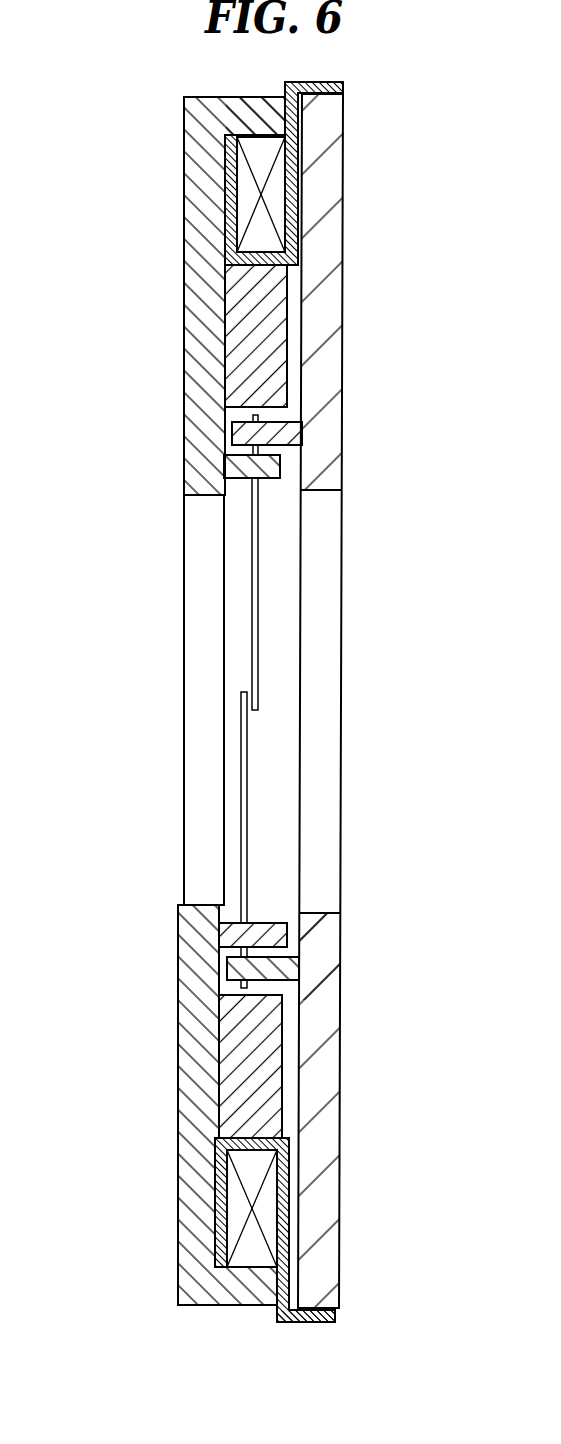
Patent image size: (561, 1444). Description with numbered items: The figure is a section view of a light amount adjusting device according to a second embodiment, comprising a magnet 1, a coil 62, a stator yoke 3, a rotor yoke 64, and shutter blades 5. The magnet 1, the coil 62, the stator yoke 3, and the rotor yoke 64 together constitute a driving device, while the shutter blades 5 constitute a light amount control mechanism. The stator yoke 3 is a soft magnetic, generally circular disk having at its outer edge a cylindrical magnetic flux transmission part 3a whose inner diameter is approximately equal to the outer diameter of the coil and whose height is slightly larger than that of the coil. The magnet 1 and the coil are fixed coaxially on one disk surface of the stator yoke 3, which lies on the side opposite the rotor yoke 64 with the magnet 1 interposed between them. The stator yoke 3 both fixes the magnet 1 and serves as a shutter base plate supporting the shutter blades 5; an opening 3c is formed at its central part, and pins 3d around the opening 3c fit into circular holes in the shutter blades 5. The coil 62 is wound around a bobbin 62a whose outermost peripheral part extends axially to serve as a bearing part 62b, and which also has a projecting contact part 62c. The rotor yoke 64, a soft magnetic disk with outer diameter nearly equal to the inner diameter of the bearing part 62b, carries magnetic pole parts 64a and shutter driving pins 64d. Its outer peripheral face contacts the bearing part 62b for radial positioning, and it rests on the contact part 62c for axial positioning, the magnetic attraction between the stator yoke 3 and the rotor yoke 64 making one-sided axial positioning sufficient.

The magnet 1 is at (285, 318).
The stator yoke 3 is at (197, 290).
The magnetic flux transmission part 3a is at (237, 117).
The opening 3c is at (193, 728).
The pins 3d is at (243, 468).
The shutter blades 5 is at (258, 617).
The coil 62 is at (275, 202).
The bobbin 62a is at (217, 1195).
The bearing part 62b is at (277, 1313).
The contact part 62c is at (297, 1140).
The rotor yoke 64 is at (320, 1060).
The magnetic pole parts 64a is at (323, 953).
The shutter driving pins 64d is at (288, 437).